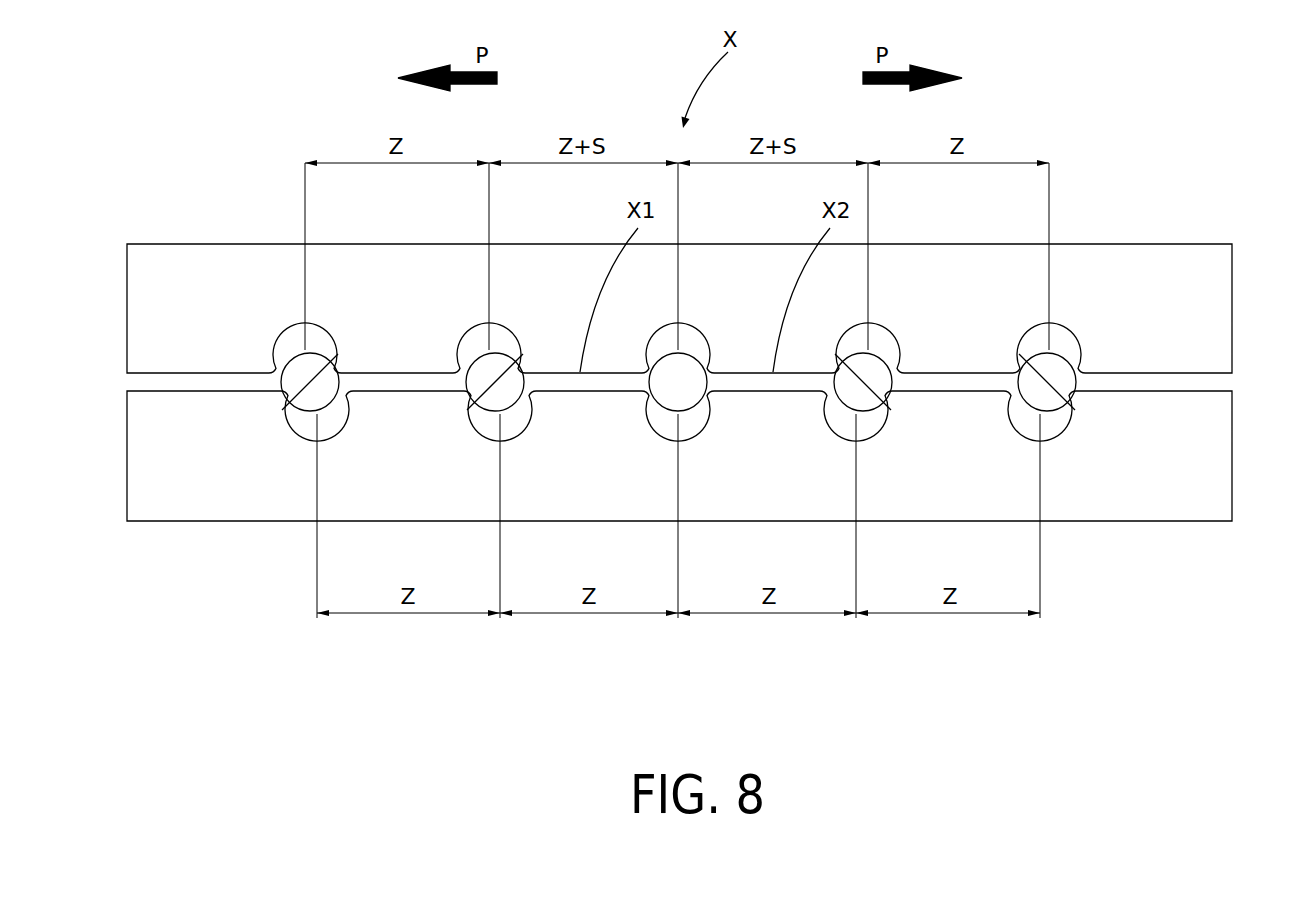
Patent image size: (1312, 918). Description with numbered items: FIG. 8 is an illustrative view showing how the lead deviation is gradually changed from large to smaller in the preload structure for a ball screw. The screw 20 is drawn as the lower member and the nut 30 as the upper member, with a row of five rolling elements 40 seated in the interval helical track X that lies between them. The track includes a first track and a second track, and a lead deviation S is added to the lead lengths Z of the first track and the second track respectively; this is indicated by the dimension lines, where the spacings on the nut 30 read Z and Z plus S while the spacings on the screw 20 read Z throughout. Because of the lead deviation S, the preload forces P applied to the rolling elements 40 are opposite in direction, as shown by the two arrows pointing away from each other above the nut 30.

The screw 20 is at (1218, 467).
The nut 30 is at (1218, 317).
The rolling elements 40 is at (1055, 372).